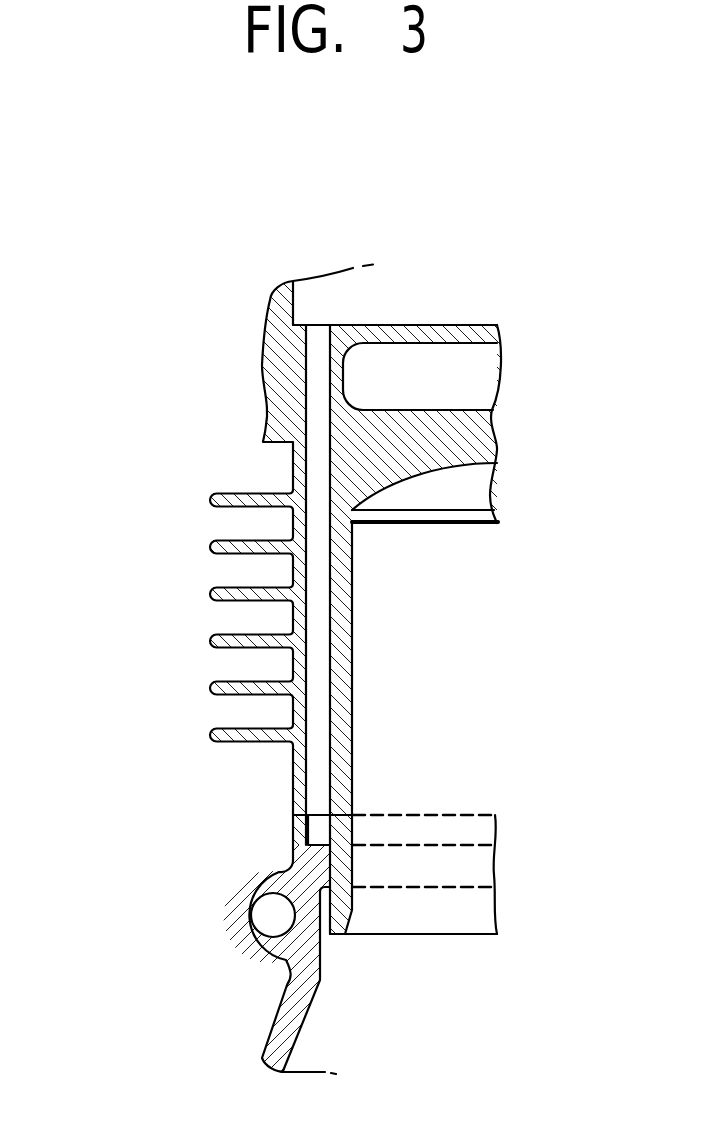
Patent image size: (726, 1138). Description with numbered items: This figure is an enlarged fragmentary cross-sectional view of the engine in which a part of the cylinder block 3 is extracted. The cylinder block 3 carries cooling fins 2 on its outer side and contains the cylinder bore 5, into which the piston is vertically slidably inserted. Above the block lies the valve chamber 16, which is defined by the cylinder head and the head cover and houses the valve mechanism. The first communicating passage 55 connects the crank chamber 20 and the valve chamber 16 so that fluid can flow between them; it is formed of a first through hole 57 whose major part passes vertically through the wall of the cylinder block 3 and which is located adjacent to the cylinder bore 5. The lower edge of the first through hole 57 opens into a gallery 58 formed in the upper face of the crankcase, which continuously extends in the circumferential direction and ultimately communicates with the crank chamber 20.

The valve chamber 16 is at (405, 312).
The cylinder block 3 is at (343, 533).
The cooling fins 2 is at (252, 590).
The cylinder bore 5 is at (208, 600).
The first communicating passage 55 is at (197, 585).
The first through hole 57 is at (353, 672).
The gallery 58 is at (320, 833).
The crank chamber 20 is at (360, 1037).